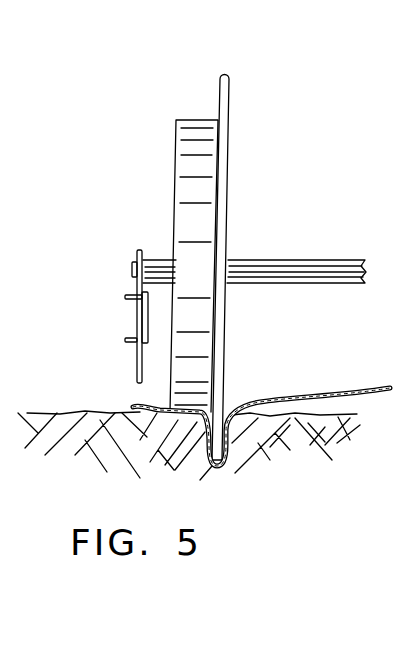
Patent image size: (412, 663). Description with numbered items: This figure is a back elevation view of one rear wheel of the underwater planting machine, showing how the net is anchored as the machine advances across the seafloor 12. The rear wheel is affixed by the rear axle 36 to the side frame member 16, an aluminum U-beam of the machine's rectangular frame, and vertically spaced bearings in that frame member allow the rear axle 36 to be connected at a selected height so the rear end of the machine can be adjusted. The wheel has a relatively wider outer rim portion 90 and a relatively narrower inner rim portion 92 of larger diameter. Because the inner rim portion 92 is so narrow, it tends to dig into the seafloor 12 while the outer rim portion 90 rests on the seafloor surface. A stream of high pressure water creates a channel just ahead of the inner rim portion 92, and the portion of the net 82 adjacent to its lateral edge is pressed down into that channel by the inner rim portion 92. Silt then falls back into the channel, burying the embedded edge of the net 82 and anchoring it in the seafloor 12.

The seafloor 12 is at (320, 493).
The left side frame member 16 is at (125, 340).
The rear axle 36 is at (294, 268).
The net 82 is at (339, 396).
The outer rim portion 90 is at (176, 140).
The inner rim portion 92 is at (226, 88).